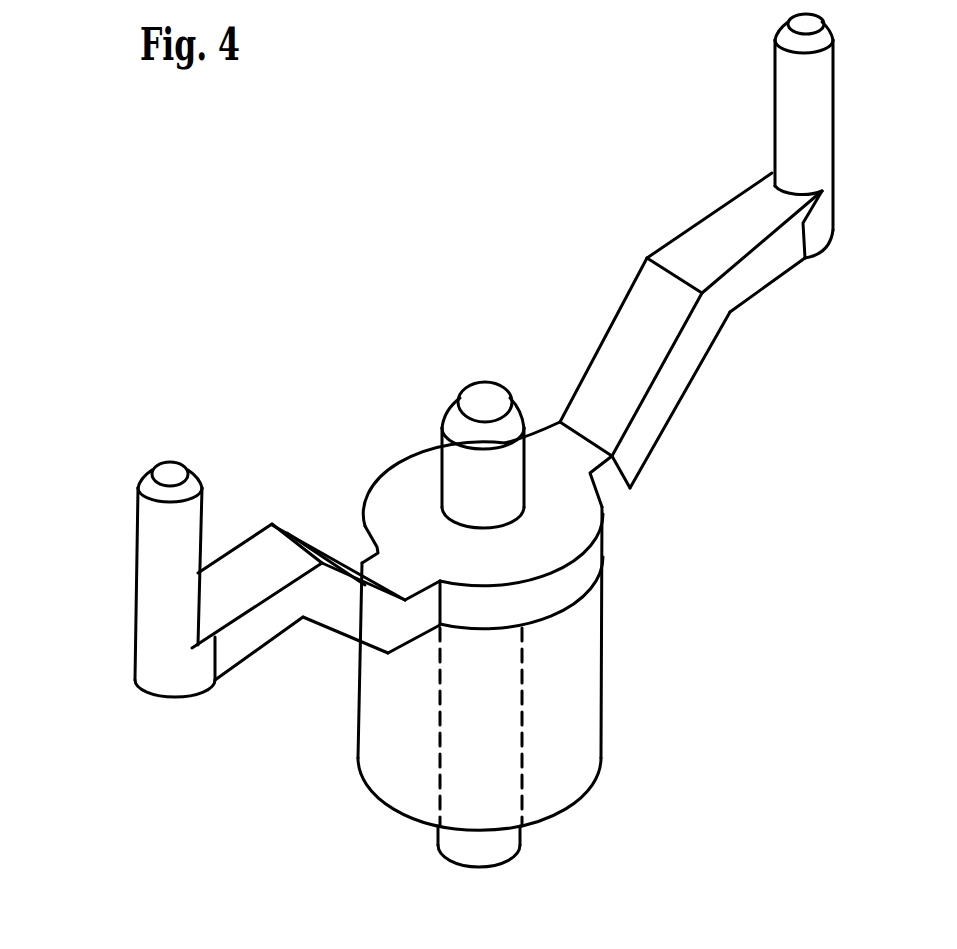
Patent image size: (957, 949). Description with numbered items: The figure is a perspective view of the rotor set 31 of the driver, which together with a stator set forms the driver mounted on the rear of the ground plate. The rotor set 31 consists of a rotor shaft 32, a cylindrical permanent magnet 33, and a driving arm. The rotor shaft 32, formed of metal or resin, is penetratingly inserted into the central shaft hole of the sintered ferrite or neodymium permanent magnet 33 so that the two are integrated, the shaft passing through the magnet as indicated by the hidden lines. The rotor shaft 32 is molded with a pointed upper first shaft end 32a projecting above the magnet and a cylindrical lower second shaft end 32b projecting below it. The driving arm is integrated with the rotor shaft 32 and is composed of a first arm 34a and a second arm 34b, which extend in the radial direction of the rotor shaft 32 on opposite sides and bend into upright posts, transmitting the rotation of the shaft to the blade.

The rotor set 31 is at (290, 318).
The rotor shaft 32 is at (453, 484).
The first shaft end 32a is at (481, 393).
The second shaft end 32b is at (492, 845).
The permanent magnet 33 is at (567, 723).
The first arm 34a is at (793, 127).
The second arm 34b is at (153, 552).